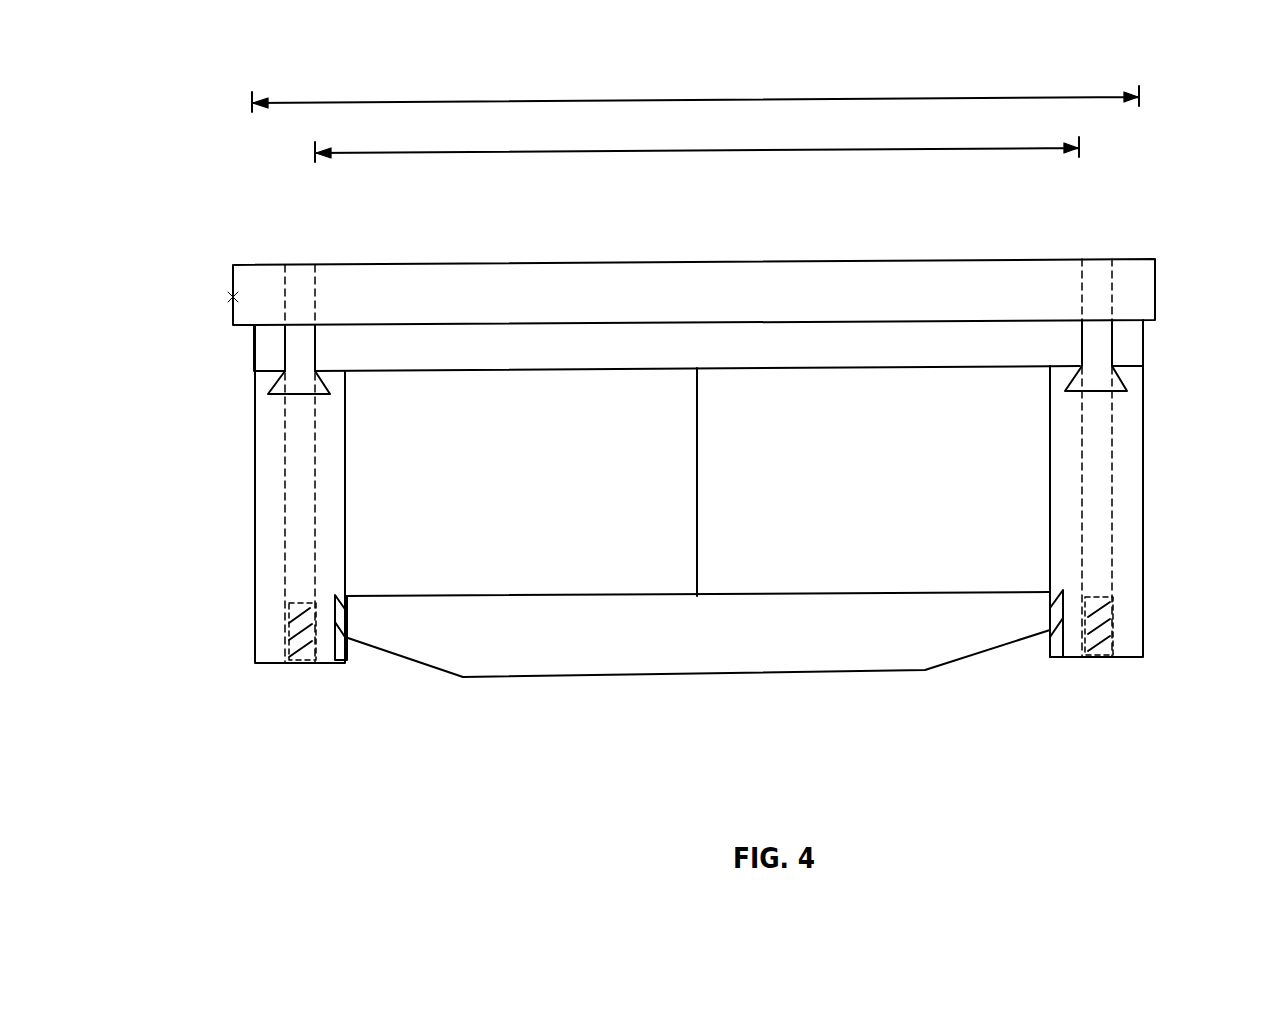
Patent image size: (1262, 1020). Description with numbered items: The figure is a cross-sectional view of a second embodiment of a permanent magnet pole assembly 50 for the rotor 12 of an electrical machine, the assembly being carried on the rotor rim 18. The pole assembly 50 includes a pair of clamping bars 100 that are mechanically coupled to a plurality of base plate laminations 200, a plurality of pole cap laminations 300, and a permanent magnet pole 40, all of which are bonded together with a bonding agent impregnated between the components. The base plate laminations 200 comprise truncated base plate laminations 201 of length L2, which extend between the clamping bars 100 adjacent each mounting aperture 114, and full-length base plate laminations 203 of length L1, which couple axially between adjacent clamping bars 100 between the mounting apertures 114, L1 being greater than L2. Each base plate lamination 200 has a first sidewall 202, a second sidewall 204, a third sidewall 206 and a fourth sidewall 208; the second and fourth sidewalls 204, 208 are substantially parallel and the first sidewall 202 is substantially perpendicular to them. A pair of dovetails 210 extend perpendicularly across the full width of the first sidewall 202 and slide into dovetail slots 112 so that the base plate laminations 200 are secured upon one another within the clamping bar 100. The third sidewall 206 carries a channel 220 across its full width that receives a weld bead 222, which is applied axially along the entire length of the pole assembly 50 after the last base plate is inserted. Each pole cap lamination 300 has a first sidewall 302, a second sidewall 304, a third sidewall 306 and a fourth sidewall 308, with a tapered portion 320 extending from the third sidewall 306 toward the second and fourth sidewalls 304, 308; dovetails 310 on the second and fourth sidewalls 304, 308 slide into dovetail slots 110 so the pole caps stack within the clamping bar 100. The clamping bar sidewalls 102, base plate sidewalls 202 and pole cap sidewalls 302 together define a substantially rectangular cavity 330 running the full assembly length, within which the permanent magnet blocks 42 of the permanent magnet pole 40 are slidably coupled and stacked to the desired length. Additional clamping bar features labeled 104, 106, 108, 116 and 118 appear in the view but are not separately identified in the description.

The length of full-length base plate laminations L1 is at (727, 103).
The length of truncated base plate laminations L2 is at (727, 153).
The rotor 12 is at (648, 278).
The rotor rim 18 is at (960, 308).
The permanent magnet pole 40 is at (614, 362).
The permanent magnet blocks 42 is at (515, 388).
The pole assembly 50 is at (618, 704).
The clamping bar 100 is at (250, 607).
The clamping bar sidewall 102 is at (345, 477).
The column bottom 104 is at (268, 665).
The column outer face 106 is at (255, 478).
The column top 108 is at (254, 371).
The dovetail slot 110 is at (316, 640).
The dovetail slot 112 is at (268, 396).
The mounting aperture 114 is at (285, 525).
The anchor bolt 116 is at (289, 620).
The tie rod 118 is at (315, 285).
The base plate lamination 200 is at (907, 338).
The truncated base plate lamination 201 is at (1079, 335).
The first sidewall 202 is at (560, 373).
The full-length base plate lamination 203 is at (1143, 355).
The second sidewall 204 is at (233, 297).
The third sidewall 206 is at (435, 312).
The fourth sidewall 208 is at (1153, 327).
The dovetail 210 is at (247, 280).
The channel 220 is at (697, 330).
The weld bead 222 is at (698, 318).
The pole cap lamination 300 is at (793, 660).
The first sidewall 302 is at (605, 596).
The second sidewall 304 is at (1052, 630).
The third sidewall 306 is at (877, 678).
The fourth sidewall 308 is at (345, 630).
The dovetail 310 is at (347, 618).
The tapered portion 320 is at (440, 663).
The cavity 330 is at (522, 601).